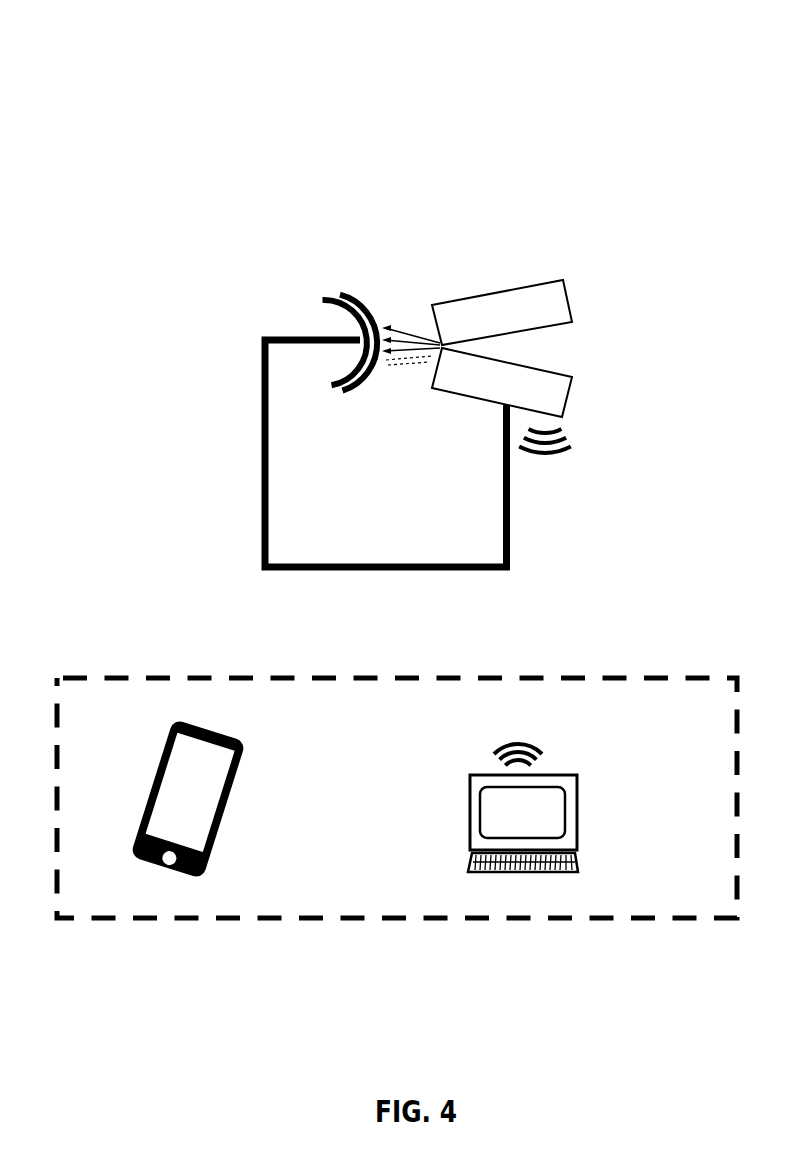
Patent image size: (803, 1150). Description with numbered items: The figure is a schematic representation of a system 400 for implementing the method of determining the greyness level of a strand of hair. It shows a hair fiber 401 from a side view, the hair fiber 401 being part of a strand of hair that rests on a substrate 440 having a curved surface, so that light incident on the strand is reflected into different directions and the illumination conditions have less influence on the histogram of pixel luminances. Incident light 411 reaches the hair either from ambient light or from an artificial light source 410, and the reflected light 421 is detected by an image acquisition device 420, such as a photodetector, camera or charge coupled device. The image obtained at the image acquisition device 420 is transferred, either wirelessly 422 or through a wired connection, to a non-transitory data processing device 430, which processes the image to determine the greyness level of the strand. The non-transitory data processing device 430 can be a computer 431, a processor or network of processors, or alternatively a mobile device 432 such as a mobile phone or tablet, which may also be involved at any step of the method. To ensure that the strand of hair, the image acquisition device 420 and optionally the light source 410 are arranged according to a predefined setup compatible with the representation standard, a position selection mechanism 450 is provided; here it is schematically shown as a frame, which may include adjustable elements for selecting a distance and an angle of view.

The system 400 is at (606, 142).
The hair fiber 401 is at (343, 296).
The artificial light source 410 is at (475, 313).
The incident light 411 is at (413, 325).
The image acquisition device 420 is at (494, 395).
The reflected light 421 is at (432, 357).
The wireless connection 422 is at (540, 735).
The non-transitory data processing device 430 is at (203, 933).
The computer 431 is at (470, 812).
The mobile device 432 is at (247, 768).
The substrate 440 is at (320, 295).
The position selection mechanism 450 is at (262, 490).